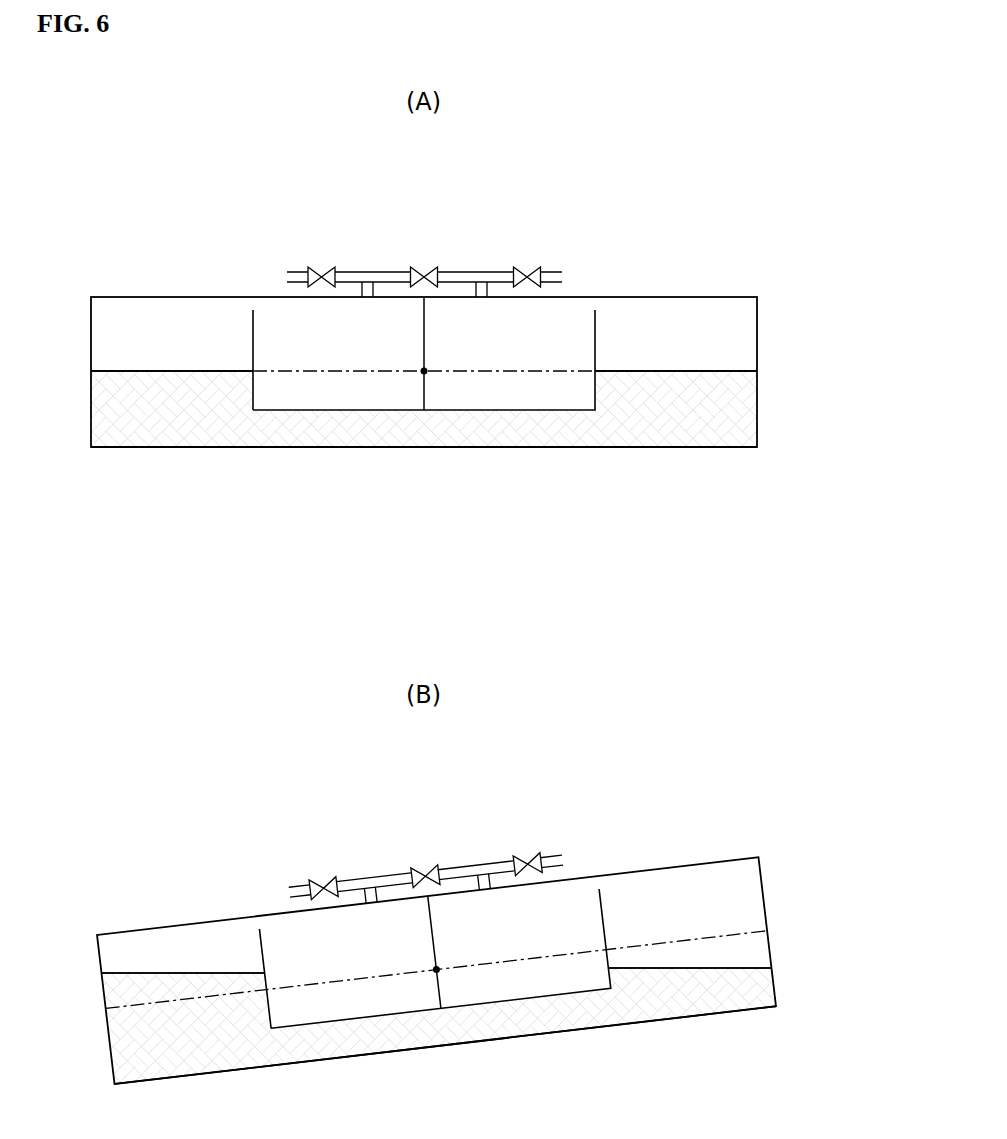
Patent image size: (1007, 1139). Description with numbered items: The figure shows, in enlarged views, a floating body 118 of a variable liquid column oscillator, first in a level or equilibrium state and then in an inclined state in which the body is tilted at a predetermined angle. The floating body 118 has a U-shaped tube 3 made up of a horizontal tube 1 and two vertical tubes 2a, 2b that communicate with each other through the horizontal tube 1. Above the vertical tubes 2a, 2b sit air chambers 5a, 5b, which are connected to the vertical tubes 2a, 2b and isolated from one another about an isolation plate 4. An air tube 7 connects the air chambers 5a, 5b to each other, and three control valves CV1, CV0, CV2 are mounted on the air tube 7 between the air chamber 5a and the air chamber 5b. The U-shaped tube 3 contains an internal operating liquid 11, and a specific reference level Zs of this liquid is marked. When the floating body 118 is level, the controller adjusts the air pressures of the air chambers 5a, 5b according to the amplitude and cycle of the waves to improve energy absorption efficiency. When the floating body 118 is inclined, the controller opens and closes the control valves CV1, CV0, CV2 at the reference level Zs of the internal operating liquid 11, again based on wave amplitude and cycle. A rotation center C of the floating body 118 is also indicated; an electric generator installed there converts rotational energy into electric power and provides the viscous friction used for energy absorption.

The horizontal tube 1 is at (463, 447).
The vertical tube 2a is at (157, 322).
The vertical tube 2b is at (717, 307).
The U-shaped tube 3 is at (757, 332).
The isolation plate 4 is at (422, 333).
The air chamber 5a is at (291, 338).
The air chamber 5b is at (563, 315).
The air tube 7 is at (426, 547).
The internal operating liquid 11 is at (208, 372).
The floating body 118 is at (682, 260).
The rotation center C is at (425, 371).
The reference level Zs is at (414, 691).
The control valve CV1 is at (318, 570).
The control valve CV0 is at (422, 564).
The control valve CV2 is at (525, 558).